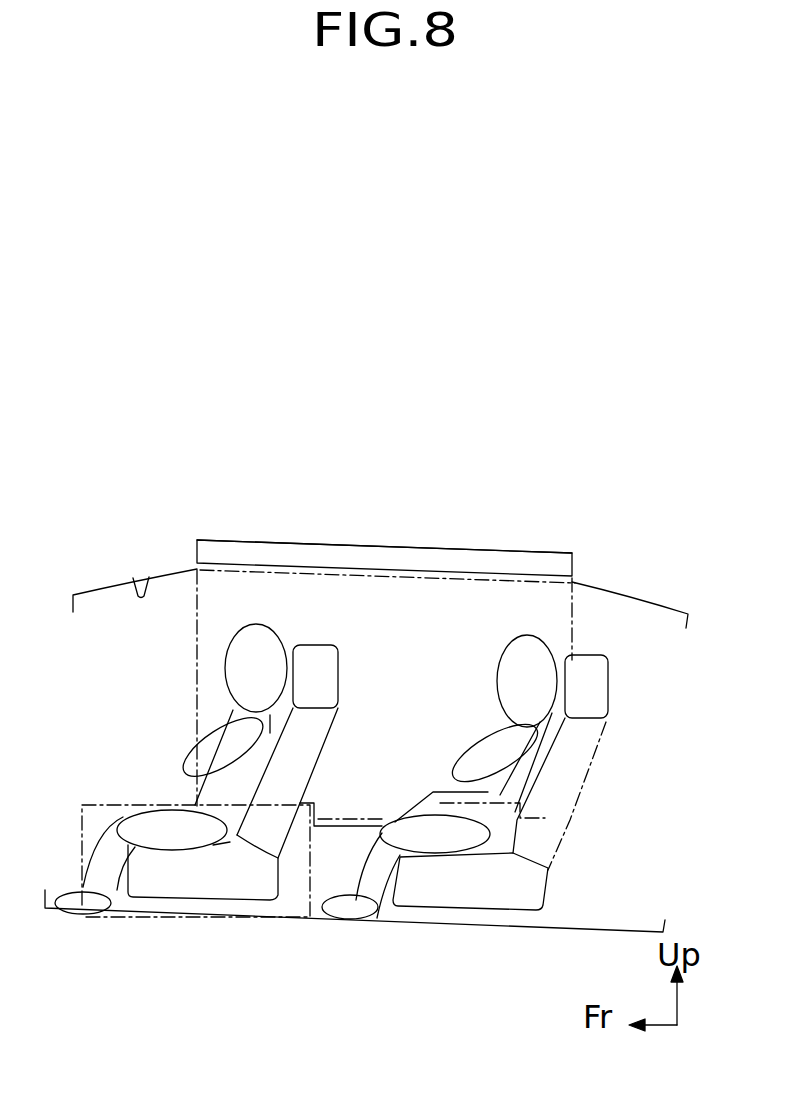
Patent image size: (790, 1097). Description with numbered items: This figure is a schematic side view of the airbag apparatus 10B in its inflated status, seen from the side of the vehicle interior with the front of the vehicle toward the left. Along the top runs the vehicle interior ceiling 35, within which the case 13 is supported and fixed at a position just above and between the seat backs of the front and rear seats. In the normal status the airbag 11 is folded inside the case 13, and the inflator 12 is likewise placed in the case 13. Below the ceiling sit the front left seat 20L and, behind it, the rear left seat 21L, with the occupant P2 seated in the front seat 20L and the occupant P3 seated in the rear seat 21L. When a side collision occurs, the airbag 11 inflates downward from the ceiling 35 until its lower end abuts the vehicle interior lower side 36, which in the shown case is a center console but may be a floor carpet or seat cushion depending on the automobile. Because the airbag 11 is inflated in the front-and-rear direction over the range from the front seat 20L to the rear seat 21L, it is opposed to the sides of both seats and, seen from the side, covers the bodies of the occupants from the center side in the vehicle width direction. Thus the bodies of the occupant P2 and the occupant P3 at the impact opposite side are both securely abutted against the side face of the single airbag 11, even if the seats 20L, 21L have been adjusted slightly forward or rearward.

The airbag apparatus 10B is at (523, 550).
The case 13 is at (323, 542).
The inflator 12 is at (412, 560).
The vehicle interior ceiling 35 is at (148, 560).
The airbag 11 is at (575, 603).
The front left seat 20L is at (168, 885).
The vehicle interior lower side 36 is at (248, 905).
The rear left seat 21L is at (448, 897).
The occupant P2 is at (225, 680).
The occupant P3 is at (497, 681).